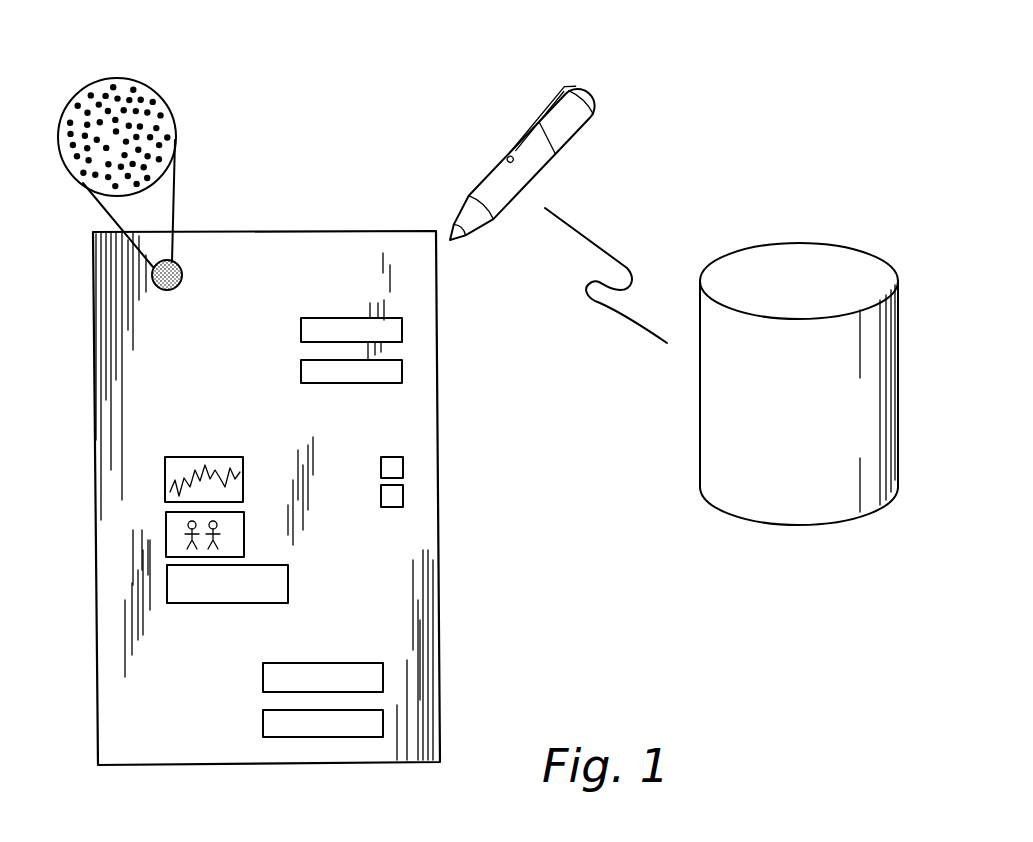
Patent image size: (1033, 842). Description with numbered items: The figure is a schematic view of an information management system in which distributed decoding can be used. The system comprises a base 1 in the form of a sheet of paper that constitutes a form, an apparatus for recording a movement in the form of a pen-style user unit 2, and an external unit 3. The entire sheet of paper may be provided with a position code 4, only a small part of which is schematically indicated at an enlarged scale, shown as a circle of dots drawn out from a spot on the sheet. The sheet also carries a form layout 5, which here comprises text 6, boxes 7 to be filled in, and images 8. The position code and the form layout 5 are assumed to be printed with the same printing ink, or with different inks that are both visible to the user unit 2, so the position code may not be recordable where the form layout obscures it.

The base 1 is at (440, 497).
The pen-style user unit 2 is at (492, 170).
The external unit 3 is at (735, 407).
The position code 4 is at (150, 133).
The form layout 5 is at (291, 264).
The text 6 is at (157, 370).
The boxes 7 is at (403, 467).
The images 8 is at (167, 527).